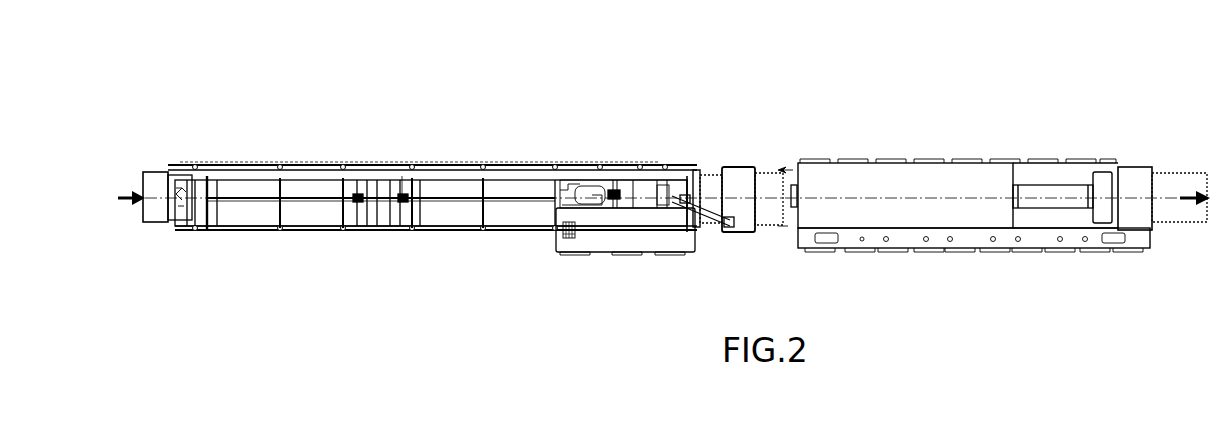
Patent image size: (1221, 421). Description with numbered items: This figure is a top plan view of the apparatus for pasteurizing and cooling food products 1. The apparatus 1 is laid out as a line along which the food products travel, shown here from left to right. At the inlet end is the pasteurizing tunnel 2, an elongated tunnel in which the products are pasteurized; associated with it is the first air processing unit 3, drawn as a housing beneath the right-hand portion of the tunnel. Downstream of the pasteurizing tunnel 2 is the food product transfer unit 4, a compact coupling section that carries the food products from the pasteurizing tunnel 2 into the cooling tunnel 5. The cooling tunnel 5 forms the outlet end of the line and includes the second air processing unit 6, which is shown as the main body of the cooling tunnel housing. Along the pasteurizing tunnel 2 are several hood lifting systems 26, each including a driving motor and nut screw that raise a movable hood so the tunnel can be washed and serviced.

The apparatus for pasteurizing and cooling food products 1 is at (1114, 93).
The pasteurizing tunnel 2 is at (400, 148).
The first air processing unit 3 is at (636, 268).
The food product transfer unit 4 is at (733, 150).
The cooling tunnel 5 is at (972, 138).
The second air processing unit 6 is at (849, 156).
The hood lifting system 26 is at (359, 204).